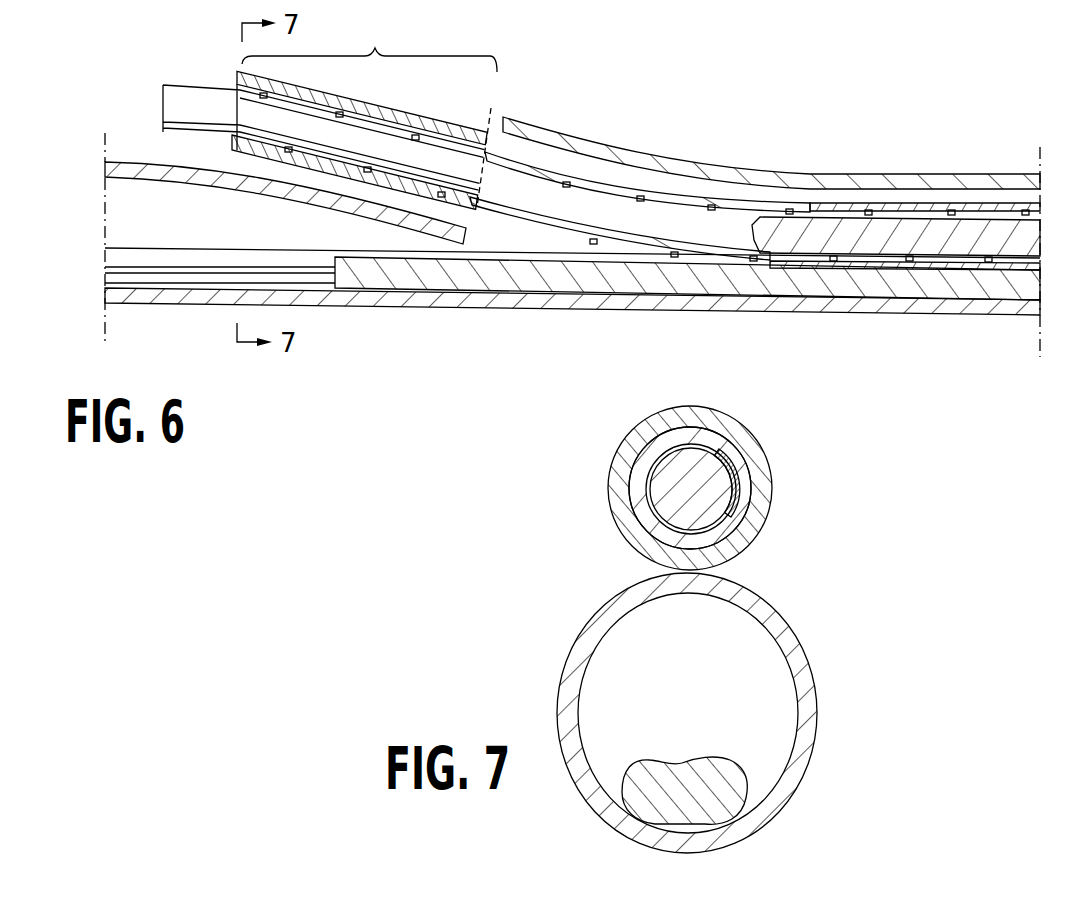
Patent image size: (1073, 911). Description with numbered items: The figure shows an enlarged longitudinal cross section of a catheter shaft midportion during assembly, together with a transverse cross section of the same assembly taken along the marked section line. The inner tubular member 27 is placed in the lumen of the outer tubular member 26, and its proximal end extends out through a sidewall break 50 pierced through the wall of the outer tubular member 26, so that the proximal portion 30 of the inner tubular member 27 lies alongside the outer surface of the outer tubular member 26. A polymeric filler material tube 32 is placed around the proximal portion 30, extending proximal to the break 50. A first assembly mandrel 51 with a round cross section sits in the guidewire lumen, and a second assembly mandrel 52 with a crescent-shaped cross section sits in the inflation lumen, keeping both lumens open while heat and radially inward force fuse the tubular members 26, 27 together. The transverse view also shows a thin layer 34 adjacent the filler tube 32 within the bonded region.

In FIG. 6, the outer tubular member 26 is at (645, 158).
In FIG. 7, the outer tubular member 26 is at (797, 670).
In FIG. 6, the inner tubular member 27 is at (822, 205).
In FIG. 7, the inner tubular member 27 is at (642, 472).
In FIG. 6, the proximal portion of the inner tubular member 30 is at (369, 46).
In FIG. 6, the polymeric filler material tube 32 is at (395, 117).
In FIG. 7, the polymeric filler material tube 32 is at (753, 527).
In FIG. 6, the braid marker band 34 is at (948, 205).
In FIG. 7, the braid marker band 34 is at (753, 470).
In FIG. 6, the sidewall break 50 is at (486, 120).
In FIG. 6, the first assembly mandrel 51 is at (938, 243).
In FIG. 7, the first assembly mandrel 51 is at (663, 512).
In FIG. 6, the second assembly mandrel 52 is at (743, 283).
In FIG. 7, the second assembly mandrel 52 is at (737, 780).